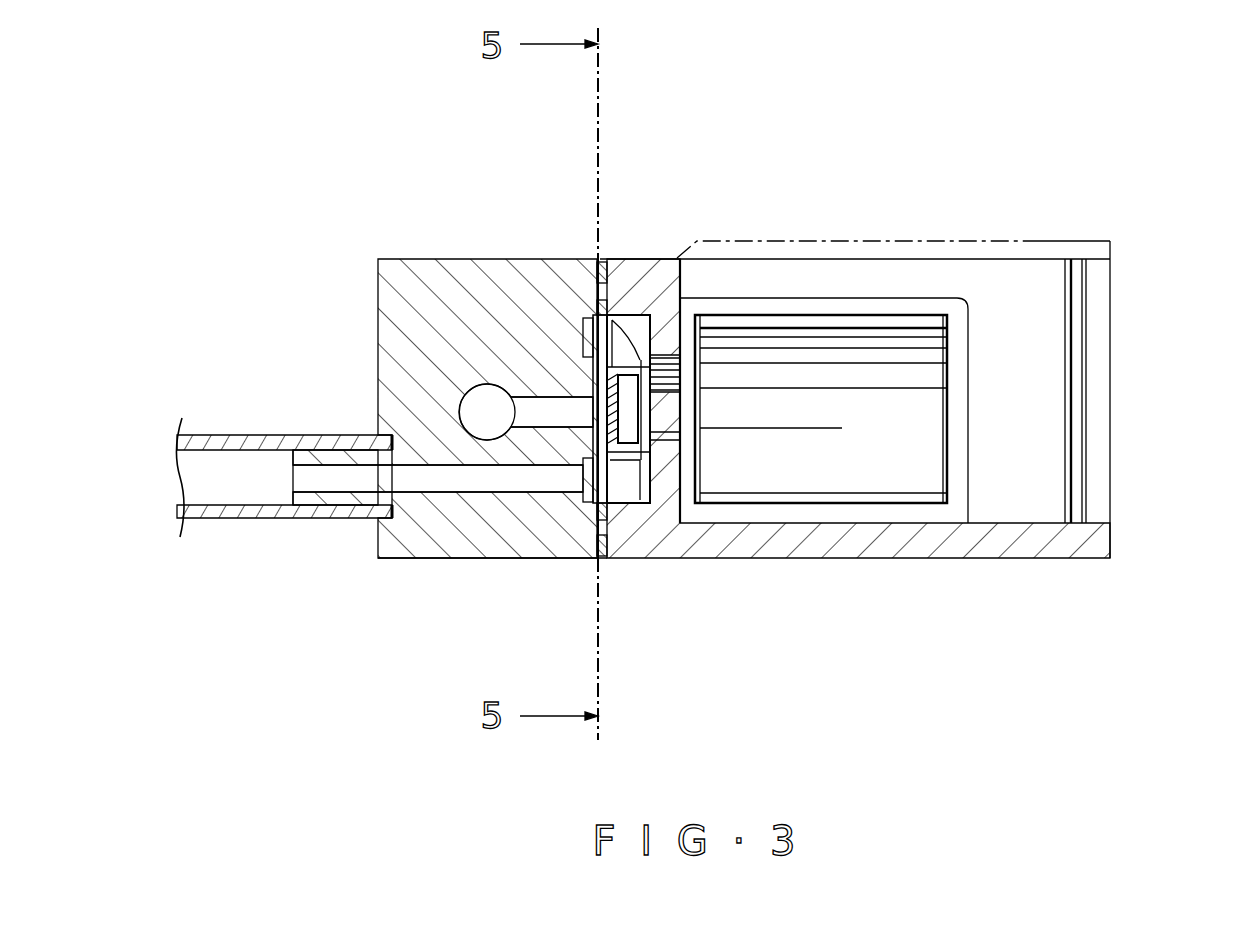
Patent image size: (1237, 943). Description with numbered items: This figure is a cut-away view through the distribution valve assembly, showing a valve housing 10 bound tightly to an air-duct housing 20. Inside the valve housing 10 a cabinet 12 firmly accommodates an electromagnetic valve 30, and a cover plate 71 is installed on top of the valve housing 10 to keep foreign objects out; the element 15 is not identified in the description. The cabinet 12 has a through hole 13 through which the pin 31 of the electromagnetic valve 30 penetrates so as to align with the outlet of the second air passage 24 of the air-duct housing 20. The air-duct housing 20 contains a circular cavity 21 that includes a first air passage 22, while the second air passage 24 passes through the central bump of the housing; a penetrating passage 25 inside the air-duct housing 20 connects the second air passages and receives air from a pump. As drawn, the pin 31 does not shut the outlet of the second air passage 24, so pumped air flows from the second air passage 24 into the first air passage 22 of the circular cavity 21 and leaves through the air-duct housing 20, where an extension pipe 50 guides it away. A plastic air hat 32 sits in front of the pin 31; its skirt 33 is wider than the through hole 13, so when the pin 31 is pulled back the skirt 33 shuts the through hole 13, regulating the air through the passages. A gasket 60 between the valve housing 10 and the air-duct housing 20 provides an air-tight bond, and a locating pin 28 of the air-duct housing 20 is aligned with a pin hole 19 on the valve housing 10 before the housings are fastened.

The valve housing 10 is at (978, 545).
The cabinet 12 is at (1023, 290).
The through hole 13 is at (673, 368).
The end cap 15 is at (1086, 323).
The pin hole 19 is at (617, 262).
The air-duct housing 20 is at (430, 545).
The circular cavity 21 is at (580, 492).
The first air passage 22 is at (502, 488).
The second air passage 24 is at (538, 410).
The penetrating passage 25 is at (482, 398).
The locating pin 28 is at (598, 258).
The electromagnetic valve 30 is at (880, 355).
The pin 31 is at (652, 408).
The air hat 32 is at (620, 358).
The skirt 33 is at (656, 458).
The extension pipe 50 is at (278, 442).
The gasket 60 is at (603, 527).
The cover plate 71 is at (932, 243).